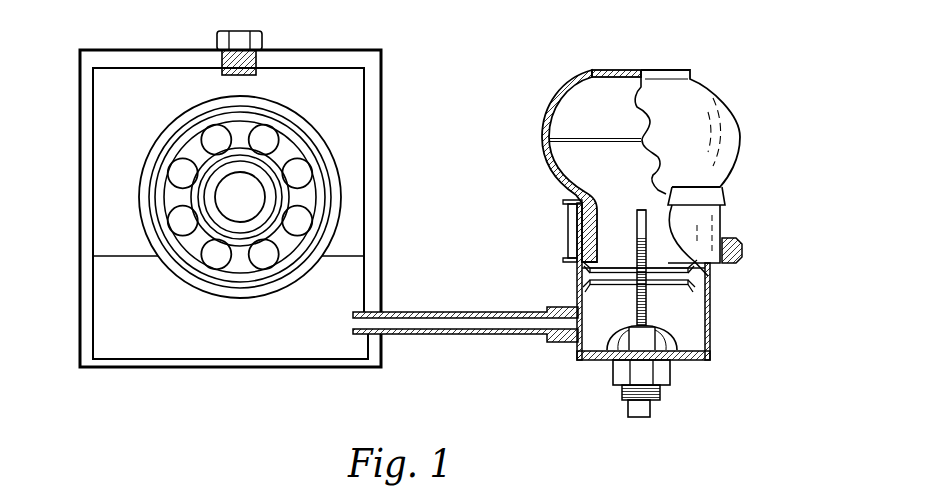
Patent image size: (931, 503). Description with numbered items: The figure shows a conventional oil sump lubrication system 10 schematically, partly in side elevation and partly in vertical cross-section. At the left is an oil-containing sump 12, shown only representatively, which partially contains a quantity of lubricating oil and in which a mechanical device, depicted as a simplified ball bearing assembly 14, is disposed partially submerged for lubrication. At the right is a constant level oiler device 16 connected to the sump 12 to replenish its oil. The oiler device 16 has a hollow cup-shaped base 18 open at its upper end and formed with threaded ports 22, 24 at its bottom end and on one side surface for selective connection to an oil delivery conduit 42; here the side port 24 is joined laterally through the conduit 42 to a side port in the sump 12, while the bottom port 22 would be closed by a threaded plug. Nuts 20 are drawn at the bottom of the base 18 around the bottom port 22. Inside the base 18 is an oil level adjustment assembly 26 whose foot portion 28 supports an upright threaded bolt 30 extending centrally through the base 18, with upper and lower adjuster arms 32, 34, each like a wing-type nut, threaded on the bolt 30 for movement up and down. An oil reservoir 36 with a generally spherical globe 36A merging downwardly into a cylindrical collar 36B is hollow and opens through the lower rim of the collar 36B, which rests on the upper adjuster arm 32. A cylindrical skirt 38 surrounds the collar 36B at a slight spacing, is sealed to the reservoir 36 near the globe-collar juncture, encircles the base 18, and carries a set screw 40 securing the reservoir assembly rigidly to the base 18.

The oil sump lubrication system 10 is at (287, 388).
The oil-containing sump 12 is at (78, 340).
The ball bearing assembly 14 is at (340, 218).
The constant level oiler device 16 is at (734, 71).
The hollow cup-shaped base 18 is at (710, 268).
The nut 20 is at (663, 377).
The bottom threaded port 22 is at (620, 386).
The side threaded port 24 is at (570, 342).
The oil level adjustment assembly 26 is at (634, 201).
The foot portion 28 is at (613, 340).
The upright threaded bolt 30 is at (642, 203).
The upper adjuster arm 32 is at (580, 259).
The lower adjuster arm 34 is at (583, 287).
The oil reservoir 36 is at (573, 90).
The spherical globe 36A is at (738, 130).
The cylindrical collar 36B is at (572, 228).
The cylindrical skirt 38 is at (708, 216).
The set screw 40 is at (744, 253).
The oil delivery conduit 42 is at (433, 330).